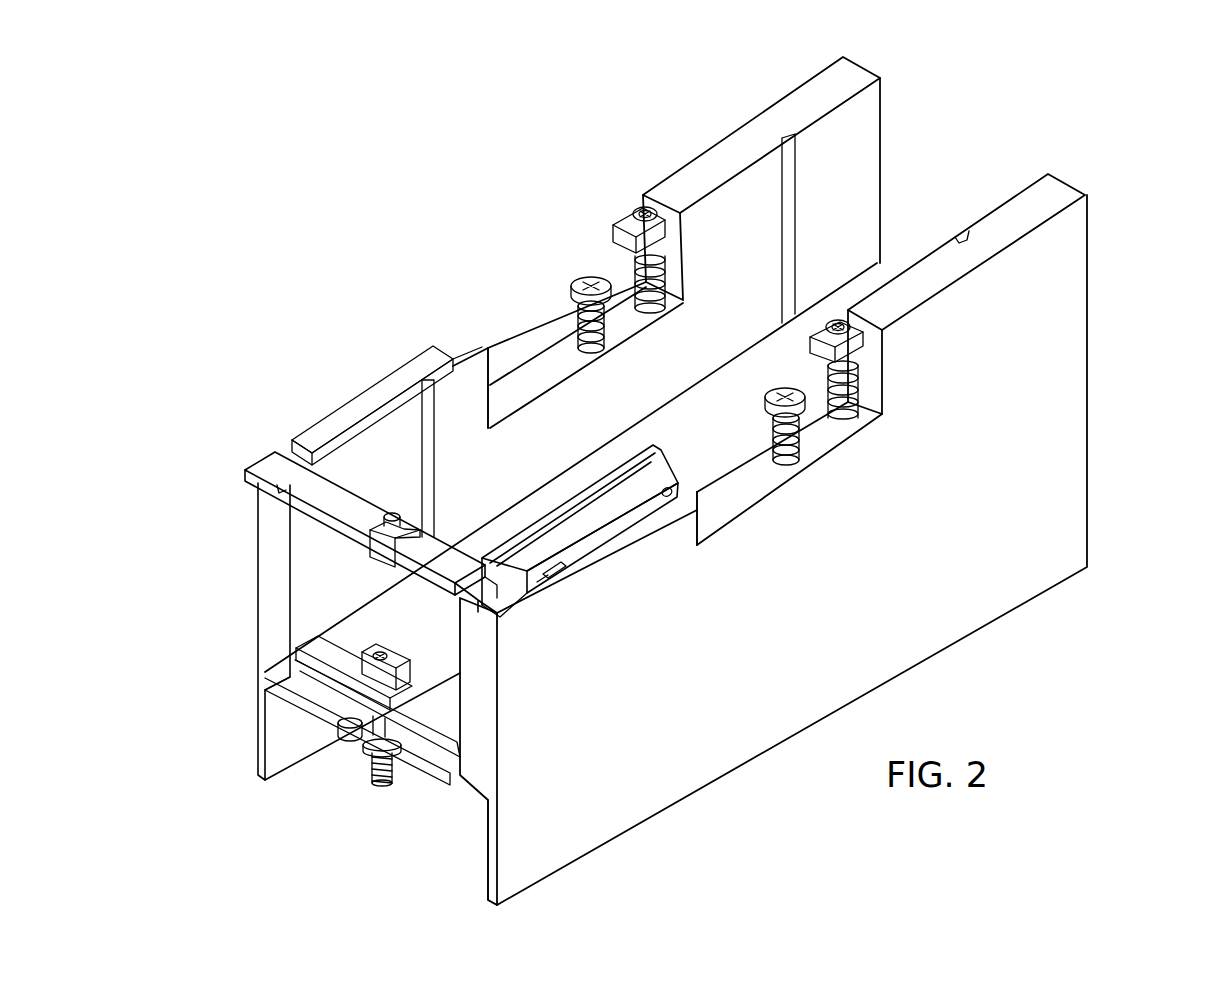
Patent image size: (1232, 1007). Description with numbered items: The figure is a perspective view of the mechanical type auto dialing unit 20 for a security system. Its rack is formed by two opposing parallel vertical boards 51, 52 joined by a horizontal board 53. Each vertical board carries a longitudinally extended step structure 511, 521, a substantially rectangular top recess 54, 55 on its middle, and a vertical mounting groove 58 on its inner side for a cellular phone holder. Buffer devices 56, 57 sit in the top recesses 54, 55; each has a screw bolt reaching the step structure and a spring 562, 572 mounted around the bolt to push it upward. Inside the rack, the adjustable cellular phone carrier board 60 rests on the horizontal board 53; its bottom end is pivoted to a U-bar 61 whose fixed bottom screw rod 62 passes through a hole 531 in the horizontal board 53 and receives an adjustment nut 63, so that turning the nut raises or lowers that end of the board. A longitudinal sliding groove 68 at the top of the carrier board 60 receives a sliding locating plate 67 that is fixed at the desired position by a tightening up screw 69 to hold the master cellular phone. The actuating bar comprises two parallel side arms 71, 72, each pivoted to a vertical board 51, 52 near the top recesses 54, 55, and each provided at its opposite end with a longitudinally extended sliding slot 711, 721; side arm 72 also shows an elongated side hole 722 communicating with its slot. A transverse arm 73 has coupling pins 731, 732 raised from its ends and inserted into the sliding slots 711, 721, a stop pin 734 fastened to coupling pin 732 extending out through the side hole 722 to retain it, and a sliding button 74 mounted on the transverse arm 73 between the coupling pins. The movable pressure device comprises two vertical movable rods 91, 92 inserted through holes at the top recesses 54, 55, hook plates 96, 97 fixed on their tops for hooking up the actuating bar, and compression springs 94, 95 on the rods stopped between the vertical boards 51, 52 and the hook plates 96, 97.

The mechanical type auto dialing unit 20 is at (1153, 285).
The vertical board 51 is at (712, 158).
The vertical board 52 is at (1030, 200).
The horizontal board 53 is at (433, 763).
The top recess 54 is at (515, 375).
The top recess 55 is at (723, 510).
The buffer device 56 is at (580, 278).
The buffer device 57 is at (795, 462).
The vertical mounting groove 58 is at (797, 170).
The adjustable cellular phone carrier board 60 is at (883, 272).
The U-bar 61 is at (258, 712).
The fixed bottom screw rod 62 is at (393, 782).
The adjustment nut 63 is at (366, 756).
The sliding locating plate 67 is at (392, 660).
The longitudinal sliding groove 68 is at (378, 630).
The tightening up screw 69 is at (385, 655).
The side arm 71 is at (385, 383).
The side arm 72 is at (637, 513).
The transverse arm 73 is at (257, 505).
The sliding button 74 is at (393, 513).
The vertical movable rod 91 is at (641, 210).
The vertical movable rod 92 is at (884, 348).
The compression spring 94 is at (636, 258).
The compression spring 95 is at (860, 395).
The hook plate 96 is at (633, 213).
The hook plate 97 is at (825, 396).
The step structure 511 is at (297, 677).
The step structure 521 is at (478, 797).
The hole 531 is at (342, 735).
The spring 562 is at (575, 318).
The spring 572 is at (803, 437).
The longitudinally extended sliding slot 711 is at (283, 448).
The longitudinally extended sliding slot 721 is at (540, 582).
The elongated side hole 722 is at (560, 570).
The coupling pin 731 is at (298, 452).
The coupling pin 732 is at (500, 603).
The stop pin 734 is at (548, 592).